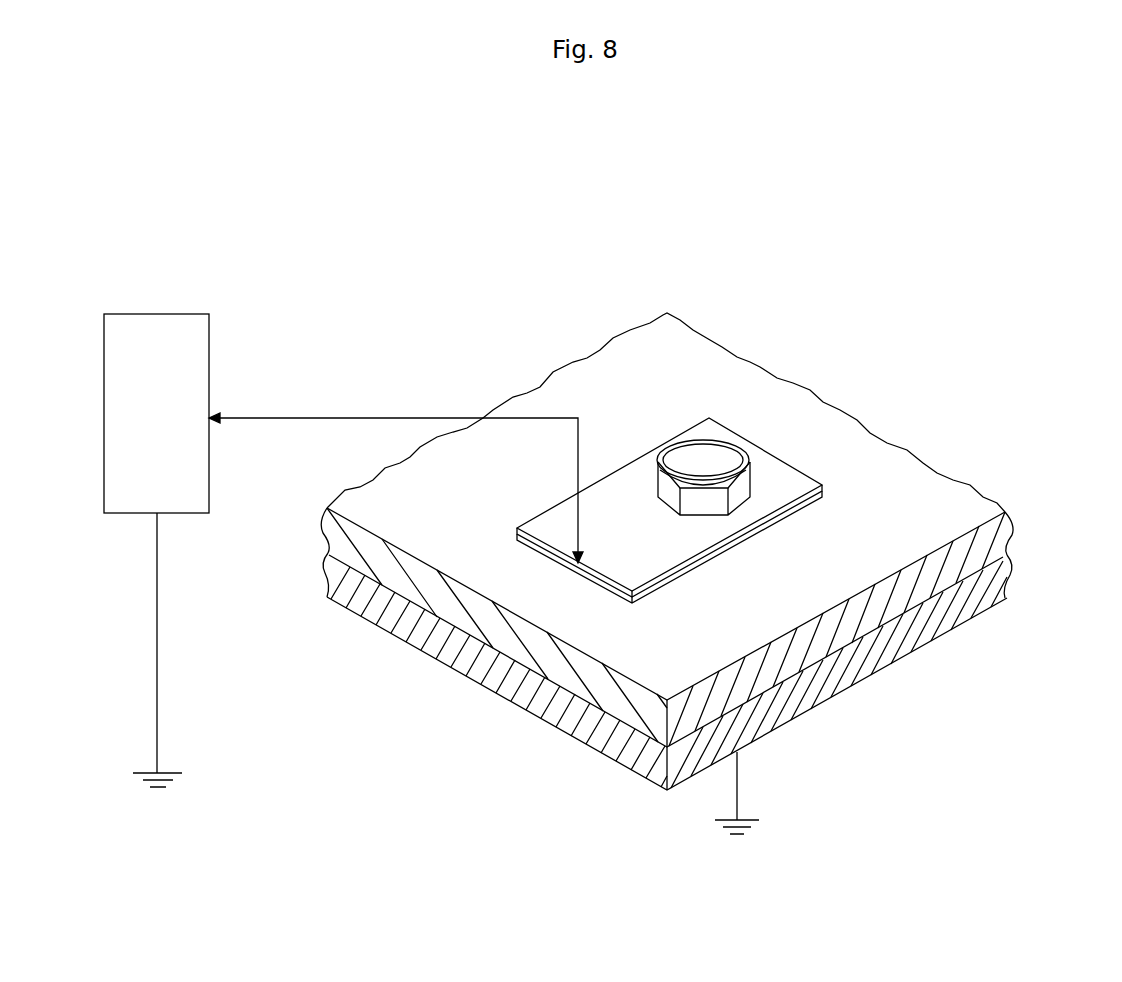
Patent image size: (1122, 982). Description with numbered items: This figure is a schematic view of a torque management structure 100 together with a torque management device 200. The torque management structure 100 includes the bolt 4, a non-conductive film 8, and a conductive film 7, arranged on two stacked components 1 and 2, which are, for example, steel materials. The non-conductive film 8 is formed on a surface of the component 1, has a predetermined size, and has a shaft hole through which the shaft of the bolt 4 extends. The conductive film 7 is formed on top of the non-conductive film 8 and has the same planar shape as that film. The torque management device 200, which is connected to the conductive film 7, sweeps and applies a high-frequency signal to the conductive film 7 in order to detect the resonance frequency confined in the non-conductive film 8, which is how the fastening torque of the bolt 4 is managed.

The torque management device 200 is at (158, 314).
The torque management structure 100 is at (930, 422).
The component 1 is at (1008, 537).
The component 2 is at (1008, 582).
The conductive film 7 is at (642, 482).
The non-conductive film 8 is at (788, 517).
The bolt 4 is at (708, 460).